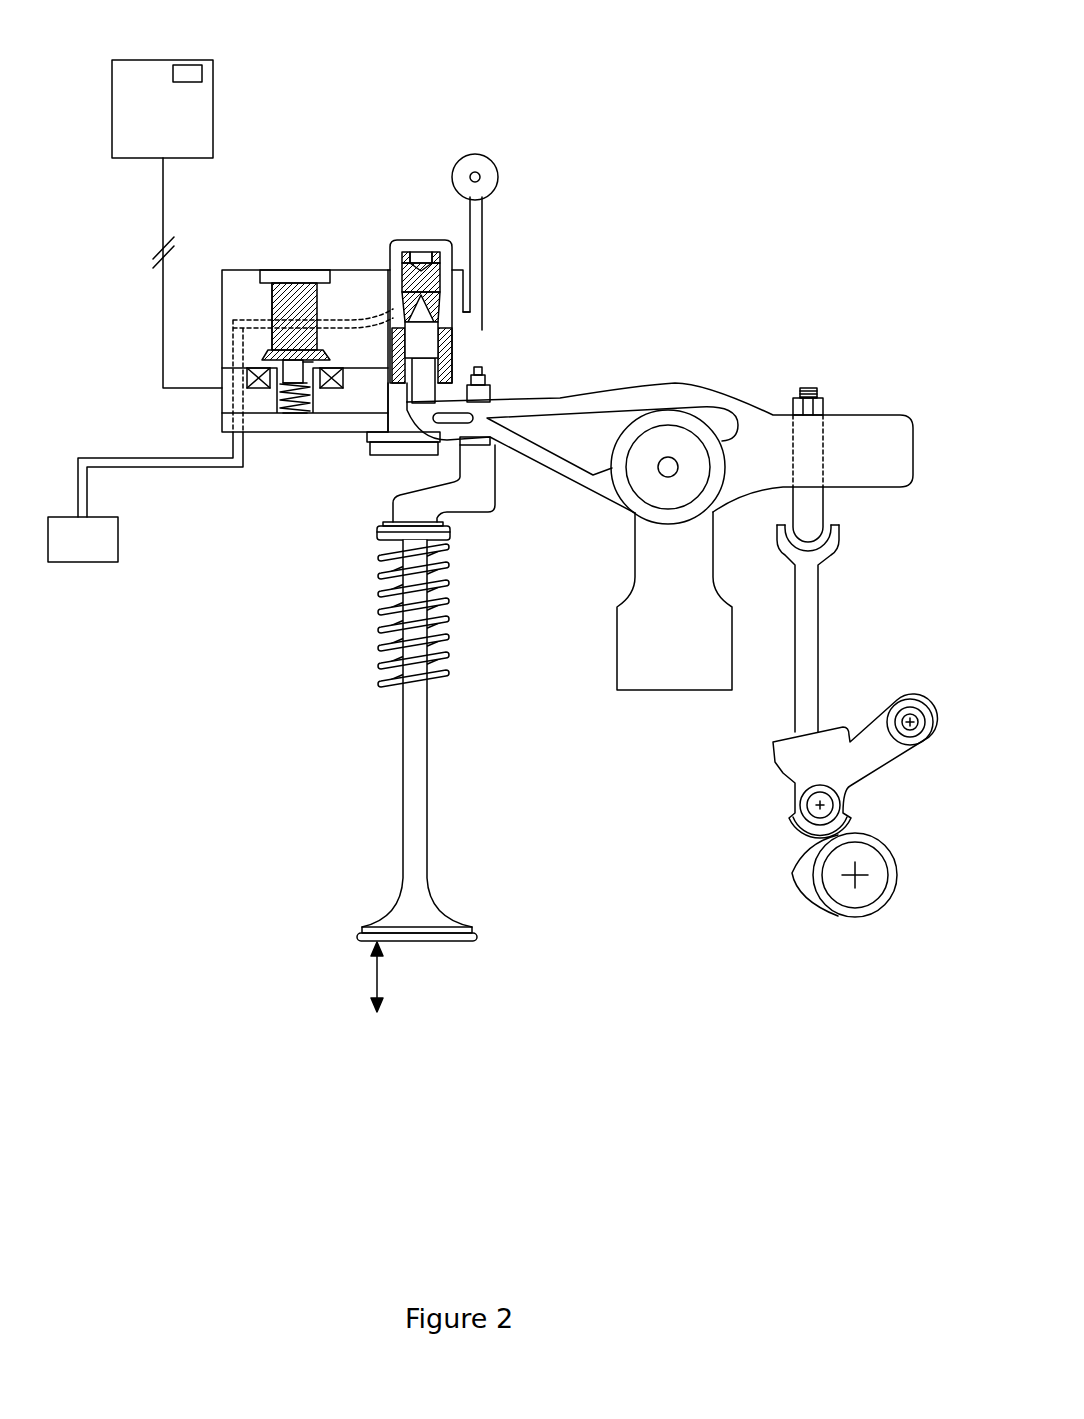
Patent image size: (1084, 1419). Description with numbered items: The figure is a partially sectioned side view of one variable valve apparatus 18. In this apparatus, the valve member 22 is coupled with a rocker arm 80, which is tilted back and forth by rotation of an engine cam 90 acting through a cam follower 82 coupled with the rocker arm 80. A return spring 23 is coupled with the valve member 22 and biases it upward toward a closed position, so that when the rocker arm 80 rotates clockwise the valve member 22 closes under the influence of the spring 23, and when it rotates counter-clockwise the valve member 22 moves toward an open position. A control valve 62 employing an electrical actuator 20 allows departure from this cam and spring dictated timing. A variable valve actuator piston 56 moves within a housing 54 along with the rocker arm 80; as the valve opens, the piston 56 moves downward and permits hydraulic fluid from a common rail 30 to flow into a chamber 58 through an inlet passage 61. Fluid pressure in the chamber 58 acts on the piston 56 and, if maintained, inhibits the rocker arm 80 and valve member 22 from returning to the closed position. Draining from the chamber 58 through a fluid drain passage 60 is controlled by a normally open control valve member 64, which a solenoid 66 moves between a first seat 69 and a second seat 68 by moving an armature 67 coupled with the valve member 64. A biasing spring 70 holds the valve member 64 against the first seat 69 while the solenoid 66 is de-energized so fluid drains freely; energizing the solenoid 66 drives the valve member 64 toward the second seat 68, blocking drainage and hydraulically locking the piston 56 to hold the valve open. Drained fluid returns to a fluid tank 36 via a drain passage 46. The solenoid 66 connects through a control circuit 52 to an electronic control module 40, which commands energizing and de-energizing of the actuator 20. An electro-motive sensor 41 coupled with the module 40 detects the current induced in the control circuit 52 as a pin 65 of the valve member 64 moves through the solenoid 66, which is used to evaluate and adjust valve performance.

The valve apparatus 18 is at (300, 678).
The electrical actuator 20 is at (323, 406).
The valve member 22 is at (437, 935).
The return spring 23 is at (448, 676).
The common rail 30 is at (497, 176).
The fluid tank 36 is at (98, 553).
The electronic control module 40 is at (213, 118).
The electro-motive sensor 41 is at (174, 72).
The drain passage 46 is at (160, 467).
The control circuit 52 is at (164, 362).
The housing 54 is at (437, 240).
The variable valve actuator piston 56 is at (455, 368).
The chamber 58 is at (445, 333).
The fluid drain passage 60 is at (345, 312).
The inlet passage 61 is at (483, 272).
The control valve 62 is at (235, 262).
The control valve member 64 is at (283, 295).
The pin 65 is at (288, 392).
The solenoid 66 is at (345, 377).
The armature 67 is at (262, 345).
The second seat 68 is at (318, 362).
The first seat 69 is at (265, 300).
The biasing spring 70 is at (287, 415).
The rocker arm 80 is at (688, 385).
The cam follower 82 is at (892, 747).
The engine cam 90 is at (890, 885).